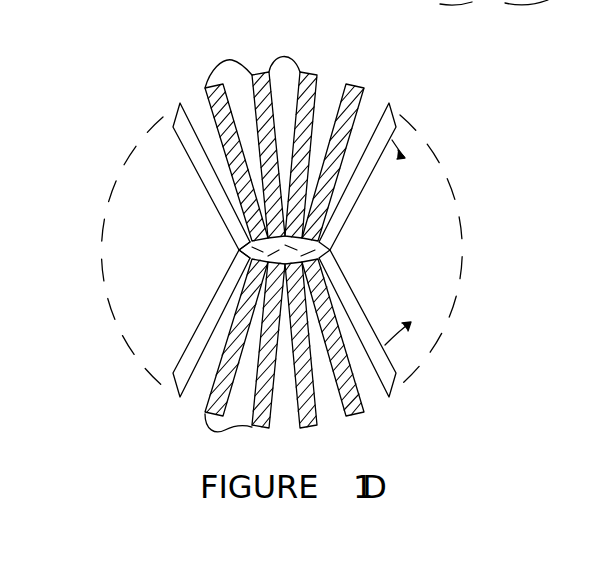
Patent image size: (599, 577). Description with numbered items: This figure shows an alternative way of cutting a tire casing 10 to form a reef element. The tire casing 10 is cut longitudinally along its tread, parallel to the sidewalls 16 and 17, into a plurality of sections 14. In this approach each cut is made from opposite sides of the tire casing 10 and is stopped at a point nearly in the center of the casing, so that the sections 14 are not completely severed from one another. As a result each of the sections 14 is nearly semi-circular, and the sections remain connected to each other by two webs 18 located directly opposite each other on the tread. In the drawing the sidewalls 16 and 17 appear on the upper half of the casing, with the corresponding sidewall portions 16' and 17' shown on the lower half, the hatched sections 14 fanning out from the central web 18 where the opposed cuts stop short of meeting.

The tire casing 10 is at (389, 70).
The sections 14 is at (247, 61).
The sidewall 16 is at (200, 176).
The first blade / plate (lower) 16' is at (195, 323).
The sidewall 17 is at (363, 176).
The second blade / plate (lower) 17' is at (366, 323).
The web 18 is at (237, 250).